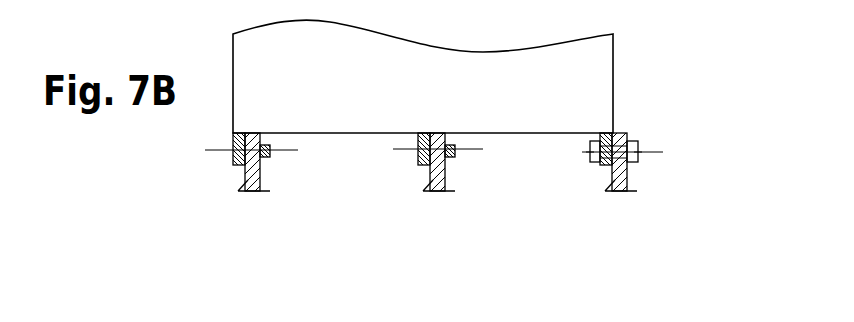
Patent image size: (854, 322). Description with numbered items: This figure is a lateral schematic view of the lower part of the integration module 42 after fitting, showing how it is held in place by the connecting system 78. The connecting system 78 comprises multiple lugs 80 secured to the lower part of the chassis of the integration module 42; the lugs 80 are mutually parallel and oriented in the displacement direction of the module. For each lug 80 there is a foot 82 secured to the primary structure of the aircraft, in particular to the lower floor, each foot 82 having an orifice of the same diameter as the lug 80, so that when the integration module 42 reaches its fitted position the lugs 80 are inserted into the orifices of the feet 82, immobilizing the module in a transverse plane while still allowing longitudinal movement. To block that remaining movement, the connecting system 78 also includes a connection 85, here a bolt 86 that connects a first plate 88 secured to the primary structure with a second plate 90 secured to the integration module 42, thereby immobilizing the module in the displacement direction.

The integration module 42 is at (256, 71).
The connecting system 78 is at (220, 208).
The lug 80 is at (270, 152).
The foot 82 is at (258, 183).
The connection 85 is at (633, 122).
The bolt 86 is at (640, 142).
The first plate 88 is at (628, 183).
The second plate 90 is at (590, 150).